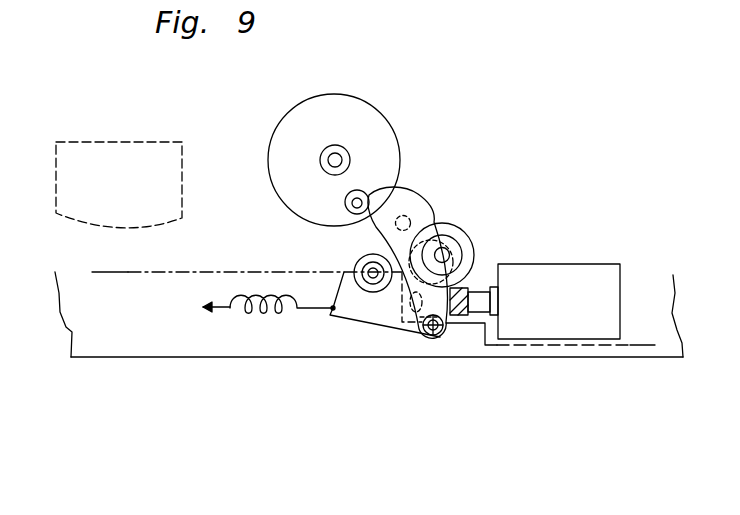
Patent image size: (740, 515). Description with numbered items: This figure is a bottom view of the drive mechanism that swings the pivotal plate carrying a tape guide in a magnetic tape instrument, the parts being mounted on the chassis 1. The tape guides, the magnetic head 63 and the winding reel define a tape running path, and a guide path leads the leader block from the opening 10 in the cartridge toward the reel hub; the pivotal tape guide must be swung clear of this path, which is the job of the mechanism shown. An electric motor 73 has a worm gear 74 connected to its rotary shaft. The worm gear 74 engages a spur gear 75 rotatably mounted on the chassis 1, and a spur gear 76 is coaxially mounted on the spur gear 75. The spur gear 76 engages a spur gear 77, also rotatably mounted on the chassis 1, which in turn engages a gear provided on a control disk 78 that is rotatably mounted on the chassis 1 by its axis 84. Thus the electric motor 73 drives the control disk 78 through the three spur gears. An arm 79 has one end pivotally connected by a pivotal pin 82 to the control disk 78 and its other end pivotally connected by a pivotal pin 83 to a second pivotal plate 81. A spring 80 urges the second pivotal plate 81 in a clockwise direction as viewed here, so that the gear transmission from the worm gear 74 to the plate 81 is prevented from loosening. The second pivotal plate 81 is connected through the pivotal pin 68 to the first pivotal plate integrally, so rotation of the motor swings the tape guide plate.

The chassis 1 is at (217, 354).
The opening 10 is at (114, 272).
The magnetic head 63 is at (135, 148).
The pivotal pin 68 is at (370, 270).
The electric motor 73 is at (578, 269).
The worm gear 74 is at (458, 316).
The spur gear 75 is at (458, 231).
The spur gear 76 is at (461, 250).
The spur gear 77 is at (422, 205).
The control disk 78 is at (382, 123).
The arm 79 is at (420, 227).
The spring 80 is at (266, 311).
The second pivotal plate 81 is at (370, 322).
The pivotal pin 82 is at (363, 197).
The pivotal pin 83 is at (439, 334).
The axis 84 is at (337, 152).